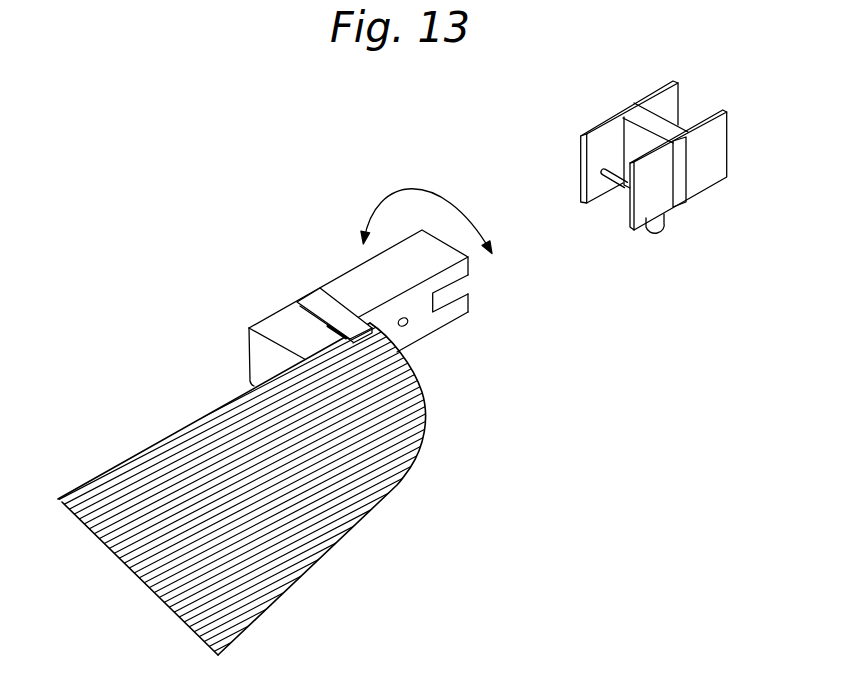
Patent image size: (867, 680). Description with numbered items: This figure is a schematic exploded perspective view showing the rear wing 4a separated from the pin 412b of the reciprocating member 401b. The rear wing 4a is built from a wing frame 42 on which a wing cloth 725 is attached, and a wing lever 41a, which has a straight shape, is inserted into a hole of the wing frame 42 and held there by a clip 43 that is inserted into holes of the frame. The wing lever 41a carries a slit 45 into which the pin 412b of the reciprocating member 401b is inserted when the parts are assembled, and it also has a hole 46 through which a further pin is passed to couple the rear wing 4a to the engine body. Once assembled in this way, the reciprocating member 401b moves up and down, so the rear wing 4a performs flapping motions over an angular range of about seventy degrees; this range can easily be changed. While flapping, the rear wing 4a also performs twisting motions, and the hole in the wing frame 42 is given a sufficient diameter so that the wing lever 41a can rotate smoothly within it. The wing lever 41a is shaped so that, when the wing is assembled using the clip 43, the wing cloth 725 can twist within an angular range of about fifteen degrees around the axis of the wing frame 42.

The rear wing 4a is at (169, 318).
The wing lever 41a is at (341, 279).
The wing frame 42 is at (200, 415).
The clip 43 is at (310, 297).
The slit 45 is at (457, 291).
The hole 46 is at (407, 321).
The wing cloth 725 is at (362, 516).
The reciprocating member 401b is at (634, 101).
The pin 412b is at (612, 189).